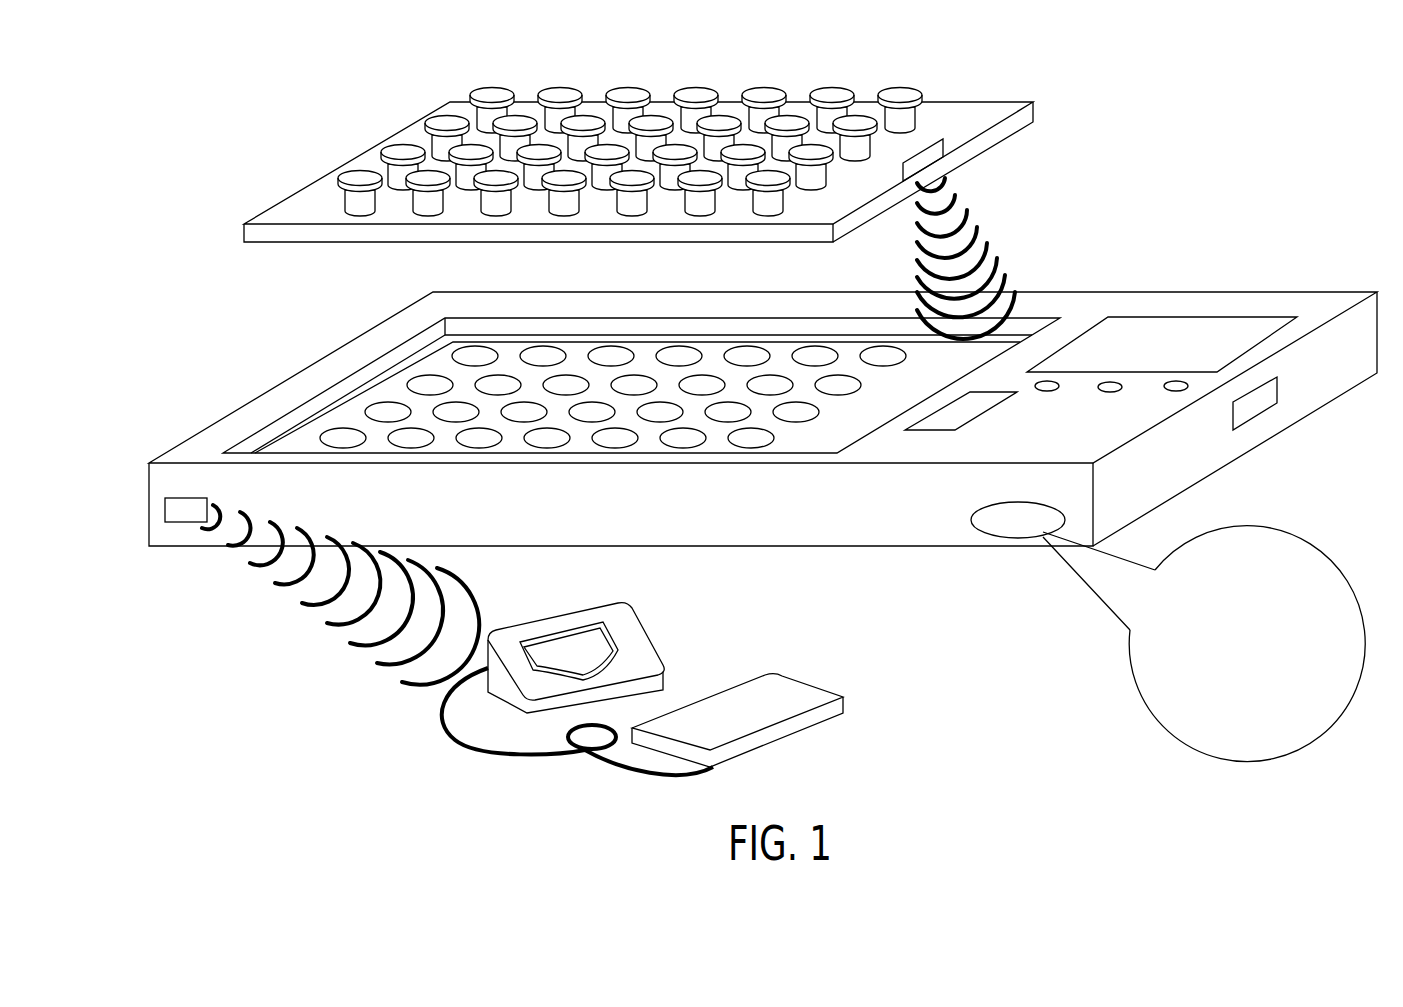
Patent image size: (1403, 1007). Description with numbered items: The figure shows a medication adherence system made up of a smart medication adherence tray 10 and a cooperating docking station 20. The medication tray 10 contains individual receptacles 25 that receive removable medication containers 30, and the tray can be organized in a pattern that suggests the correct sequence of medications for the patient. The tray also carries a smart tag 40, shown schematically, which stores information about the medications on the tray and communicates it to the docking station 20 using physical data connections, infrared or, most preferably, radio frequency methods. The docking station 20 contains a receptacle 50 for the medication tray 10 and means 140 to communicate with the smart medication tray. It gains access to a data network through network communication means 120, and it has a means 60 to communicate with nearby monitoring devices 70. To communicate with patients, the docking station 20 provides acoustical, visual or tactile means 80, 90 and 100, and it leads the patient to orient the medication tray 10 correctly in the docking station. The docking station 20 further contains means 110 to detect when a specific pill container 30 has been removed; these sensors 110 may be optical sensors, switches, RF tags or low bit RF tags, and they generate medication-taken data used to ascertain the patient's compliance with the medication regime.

The smart medication adherence tray 10 is at (285, 197).
The docking station 20 is at (208, 427).
The receptacles 25 is at (409, 212).
The removable medication containers 30 is at (442, 122).
The smart tag 40 is at (947, 143).
The receptacle 50 is at (822, 453).
The means to communicate with nearby monitoring devices 60 is at (188, 522).
The monitoring devices 70 is at (648, 617).
The acoustical means to communicate with patients 80 is at (1007, 537).
The means to communicate with patients 90 is at (1053, 392).
The visual means to communicate with patients 100 is at (1197, 317).
The sensors 110 is at (558, 440).
The network communication means 120 is at (1278, 395).
The means to communicate with the smart medication tray 140 is at (968, 417).